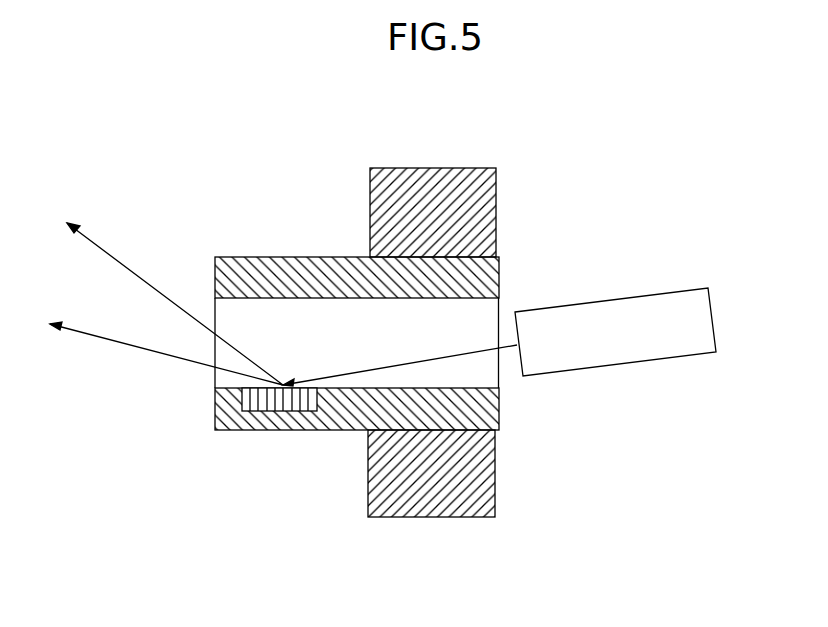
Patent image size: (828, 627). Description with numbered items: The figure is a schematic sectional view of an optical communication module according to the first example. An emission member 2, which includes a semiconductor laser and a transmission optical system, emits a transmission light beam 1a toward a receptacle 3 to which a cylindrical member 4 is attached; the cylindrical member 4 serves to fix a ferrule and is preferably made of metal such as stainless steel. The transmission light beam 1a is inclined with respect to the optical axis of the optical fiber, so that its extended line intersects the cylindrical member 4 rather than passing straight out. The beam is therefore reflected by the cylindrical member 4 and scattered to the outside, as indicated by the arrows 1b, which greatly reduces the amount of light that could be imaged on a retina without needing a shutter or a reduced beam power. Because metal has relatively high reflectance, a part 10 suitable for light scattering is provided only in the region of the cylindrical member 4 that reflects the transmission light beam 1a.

The transmission light beam 1a is at (483, 355).
The arrows 1b is at (178, 312).
The emission member 2 is at (665, 312).
The receptacle 3 is at (487, 190).
The cylindrical member 4 is at (343, 270).
The part suitable for light scattering 10 is at (303, 412).